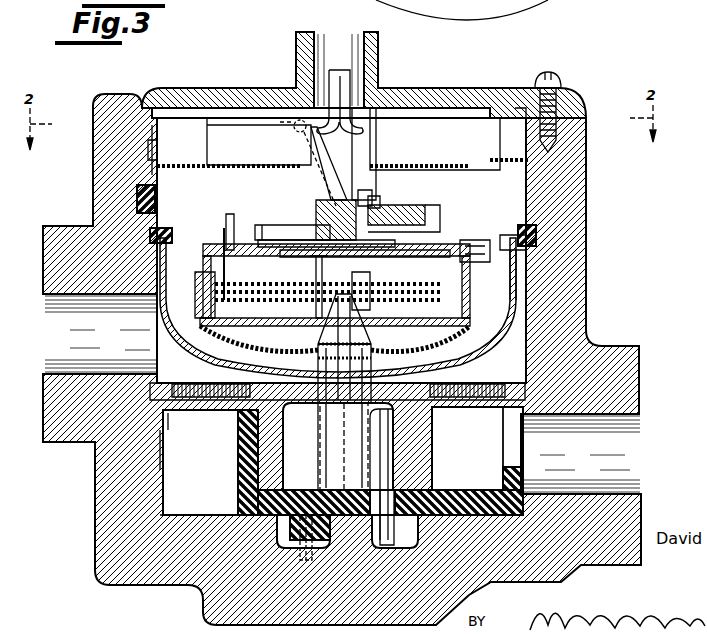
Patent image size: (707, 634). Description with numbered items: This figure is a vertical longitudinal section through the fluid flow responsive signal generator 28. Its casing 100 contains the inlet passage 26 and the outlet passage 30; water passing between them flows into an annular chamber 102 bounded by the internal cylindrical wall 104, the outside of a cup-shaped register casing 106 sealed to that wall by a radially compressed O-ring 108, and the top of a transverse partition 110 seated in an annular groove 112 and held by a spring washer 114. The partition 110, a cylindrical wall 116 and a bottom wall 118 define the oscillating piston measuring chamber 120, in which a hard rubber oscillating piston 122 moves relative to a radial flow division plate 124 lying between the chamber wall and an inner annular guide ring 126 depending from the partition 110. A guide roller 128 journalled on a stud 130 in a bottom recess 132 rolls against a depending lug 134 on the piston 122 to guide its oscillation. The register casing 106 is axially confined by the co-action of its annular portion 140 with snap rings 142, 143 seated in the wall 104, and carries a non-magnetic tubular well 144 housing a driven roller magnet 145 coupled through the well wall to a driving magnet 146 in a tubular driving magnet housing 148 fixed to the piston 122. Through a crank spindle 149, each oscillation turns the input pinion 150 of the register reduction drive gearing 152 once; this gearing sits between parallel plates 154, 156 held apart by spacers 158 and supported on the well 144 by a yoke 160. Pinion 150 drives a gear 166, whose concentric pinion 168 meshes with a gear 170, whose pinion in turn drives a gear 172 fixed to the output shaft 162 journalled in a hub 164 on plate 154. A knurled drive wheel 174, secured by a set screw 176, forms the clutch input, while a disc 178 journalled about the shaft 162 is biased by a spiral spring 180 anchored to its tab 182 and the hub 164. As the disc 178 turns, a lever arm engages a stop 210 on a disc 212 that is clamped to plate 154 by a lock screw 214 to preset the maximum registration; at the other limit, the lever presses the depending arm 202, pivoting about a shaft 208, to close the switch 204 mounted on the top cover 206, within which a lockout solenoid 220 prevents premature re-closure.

The inlet passage 26 is at (96, 304).
The signal generator 28 is at (590, 297).
The outlet passage 30 is at (569, 418).
The casing 100 is at (120, 530).
The annular chamber 102 is at (505, 350).
The internal cylindrical wall 104 is at (521, 297).
The register casing 106 is at (520, 288).
The O-ring 108 is at (534, 230).
The transverse partition 110 is at (180, 406).
The annular groove 112 is at (158, 400).
The spring washer 114 is at (156, 389).
The cylindrical wall 116 is at (162, 440).
The bottom wall 118 is at (198, 510).
The oscillating piston measuring chamber 120 is at (200, 462).
The oscillating piston 122 is at (240, 446).
The flow division plate 124 is at (467, 448).
The inner annular guide ring 126 is at (432, 467).
The guide roller 128 is at (292, 530).
The stud 130 is at (324, 570).
The bottom recess 132 is at (283, 533).
The lug 134 is at (398, 522).
The annular portion 140 is at (156, 206).
The snap ring 142 is at (150, 237).
The snap ring 143 is at (150, 150).
The tubular well 144 is at (324, 460).
The driven roller magnet 145 is at (332, 438).
The driving magnet 146 is at (438, 440).
The driving magnet housing 148 is at (394, 424).
The crank spindle 149 is at (330, 420).
The input pinion 150 is at (338, 309).
The register reduction drive gearing 152 is at (448, 248).
The plate 154 is at (424, 268).
The plate 156 is at (462, 320).
The spacers 158 is at (204, 280).
The yoke 160 is at (430, 350).
The output shaft 162 is at (360, 200).
The hub 164 is at (320, 213).
The gear 166 is at (226, 298).
The pinion 168 is at (270, 288).
The gear 170 is at (364, 291).
The gear 172 is at (359, 337).
The knurled drive wheel 174 is at (383, 208).
The set screw 176 is at (367, 205).
The disc 178 is at (424, 225).
The spiral spring 180 is at (392, 244).
The tab 182 is at (270, 225).
The arm 202 is at (328, 186).
The switch 204 is at (234, 142).
The top cover 206 is at (258, 90).
The shaft 208 is at (294, 156).
The stop 210 is at (229, 222).
The disc 212 is at (220, 252).
The lock screw 214 is at (478, 256).
The lockout solenoid 220 is at (450, 139).